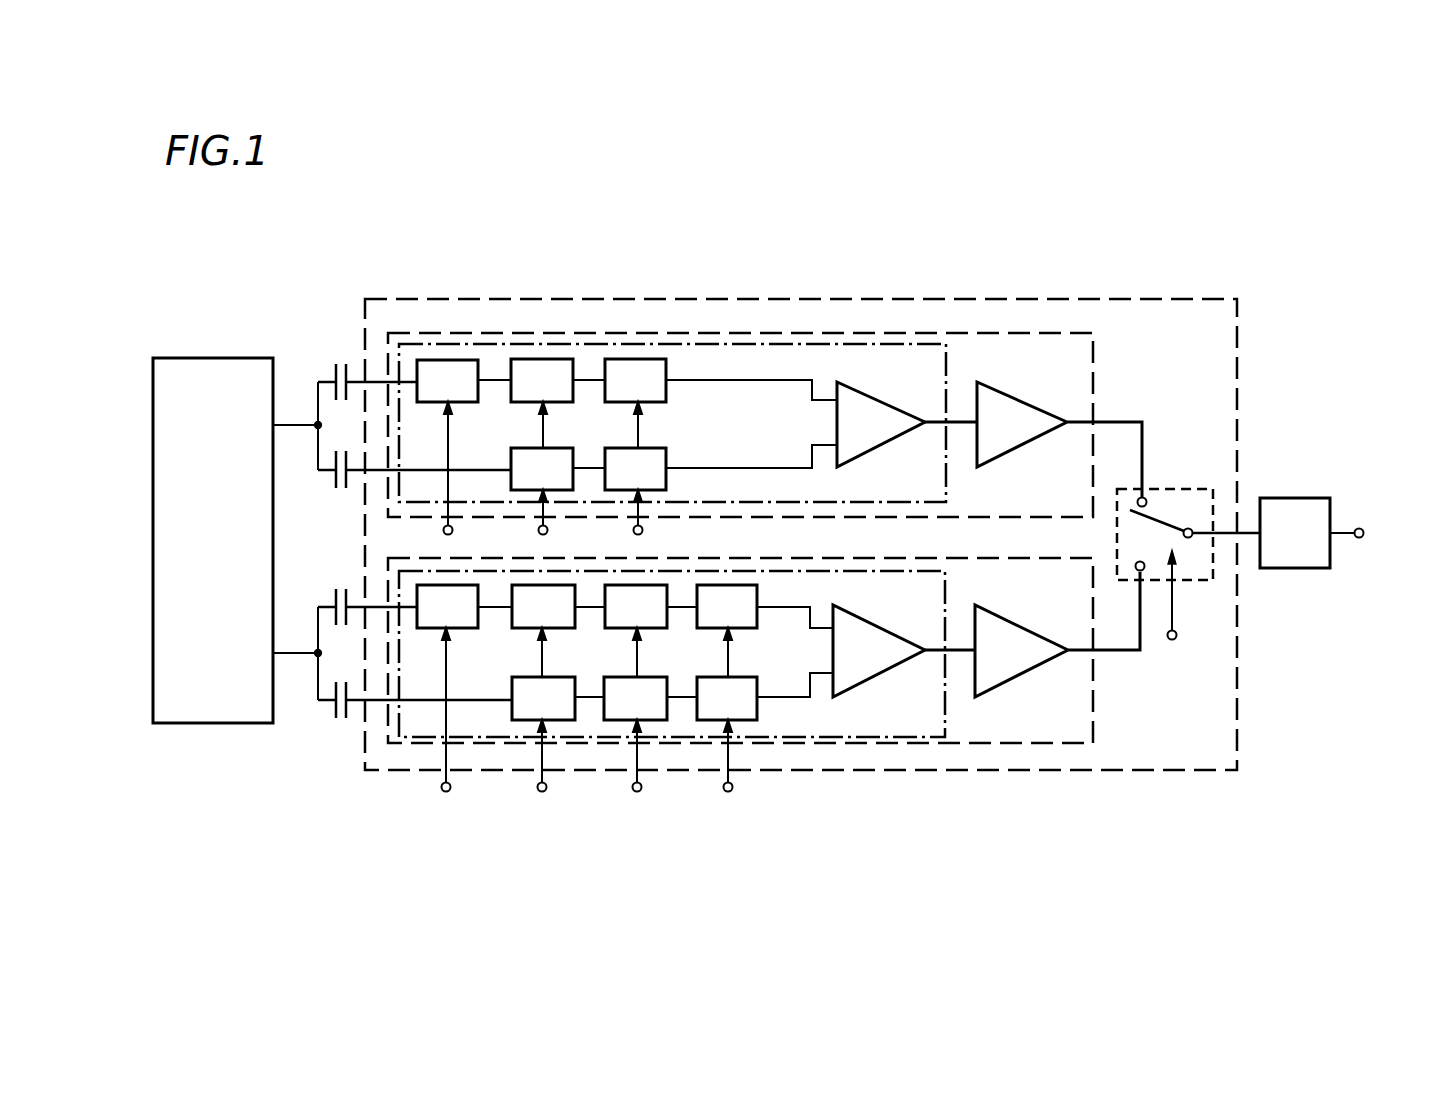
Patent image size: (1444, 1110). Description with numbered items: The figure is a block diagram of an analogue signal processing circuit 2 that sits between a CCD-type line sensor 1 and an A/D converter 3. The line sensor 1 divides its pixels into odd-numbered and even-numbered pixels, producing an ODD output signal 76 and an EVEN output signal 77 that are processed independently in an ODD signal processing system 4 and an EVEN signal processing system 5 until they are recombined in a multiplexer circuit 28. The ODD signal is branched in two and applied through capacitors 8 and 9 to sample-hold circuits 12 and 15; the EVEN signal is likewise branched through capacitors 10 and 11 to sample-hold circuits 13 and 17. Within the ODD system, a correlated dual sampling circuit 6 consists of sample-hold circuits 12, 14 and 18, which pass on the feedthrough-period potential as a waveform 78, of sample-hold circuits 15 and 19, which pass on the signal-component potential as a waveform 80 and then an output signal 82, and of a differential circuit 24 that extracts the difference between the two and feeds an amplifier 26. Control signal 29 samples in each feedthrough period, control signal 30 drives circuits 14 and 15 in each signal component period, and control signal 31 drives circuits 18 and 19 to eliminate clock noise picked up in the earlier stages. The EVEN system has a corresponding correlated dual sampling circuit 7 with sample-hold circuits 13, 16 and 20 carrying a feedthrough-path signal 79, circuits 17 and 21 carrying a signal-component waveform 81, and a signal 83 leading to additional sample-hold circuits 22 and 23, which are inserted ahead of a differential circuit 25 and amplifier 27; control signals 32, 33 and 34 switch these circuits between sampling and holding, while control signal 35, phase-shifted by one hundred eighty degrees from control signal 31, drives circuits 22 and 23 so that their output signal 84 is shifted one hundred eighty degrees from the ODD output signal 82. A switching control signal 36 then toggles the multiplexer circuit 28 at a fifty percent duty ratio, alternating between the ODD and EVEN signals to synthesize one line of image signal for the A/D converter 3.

The CCD-type line sensor 1 is at (216, 356).
The analogue signal processing circuit 2 is at (544, 298).
The A/D converter 3 is at (1284, 498).
The ODD signal processing system 4 is at (1094, 358).
The EVEN signal processing system 5 is at (1094, 723).
The correlated dual sampling circuit 6 is at (948, 366).
The correlated dual sampling circuit 7 is at (947, 593).
The capacitor 8 is at (336, 363).
The capacitor 9 is at (336, 481).
The capacitor 10 is at (339, 593).
The capacitor 11 is at (338, 707).
The sample-hold circuit 12 is at (432, 403).
The sample-hold circuit 13 is at (432, 629).
The sample-hold circuit 14 is at (520, 403).
The sample-hold circuit 15 is at (511, 484).
The sample-hold circuit 16 is at (520, 629).
The sample-hold circuit 17 is at (512, 713).
The sample-hold circuit 18 is at (666, 390).
The sample-hold circuit 19 is at (666, 482).
The sample-hold circuit 20 is at (660, 629).
The sample-hold circuit 21 is at (646, 721).
The sample-hold circuit 22 is at (757, 615).
The sample-hold circuit 23 is at (757, 710).
The differential circuit 24 is at (880, 447).
The differential circuit 25 is at (870, 678).
The amplifier 26 is at (1028, 447).
The amplifier 27 is at (1015, 678).
The multiplexer circuit 28 is at (1180, 488).
The control signal 29 is at (442, 530).
The control signal 30 is at (548, 531).
The control signal 31 is at (643, 531).
The control signal 32 is at (448, 792).
The control signal 33 is at (544, 792).
The control signal 34 is at (640, 791).
The control signal 35 is at (728, 792).
The switching control signal 36 is at (1172, 640).
The output signal 76 is at (293, 423).
The even output line 77 is at (293, 650).
The waveform 78 is at (478, 378).
The signal line 79 is at (490, 608).
The waveform 80 is at (586, 468).
The signal line 81 is at (586, 696).
The output signal 82 is at (687, 468).
The signal line 83 is at (686, 696).
The output signal 84 is at (778, 698).